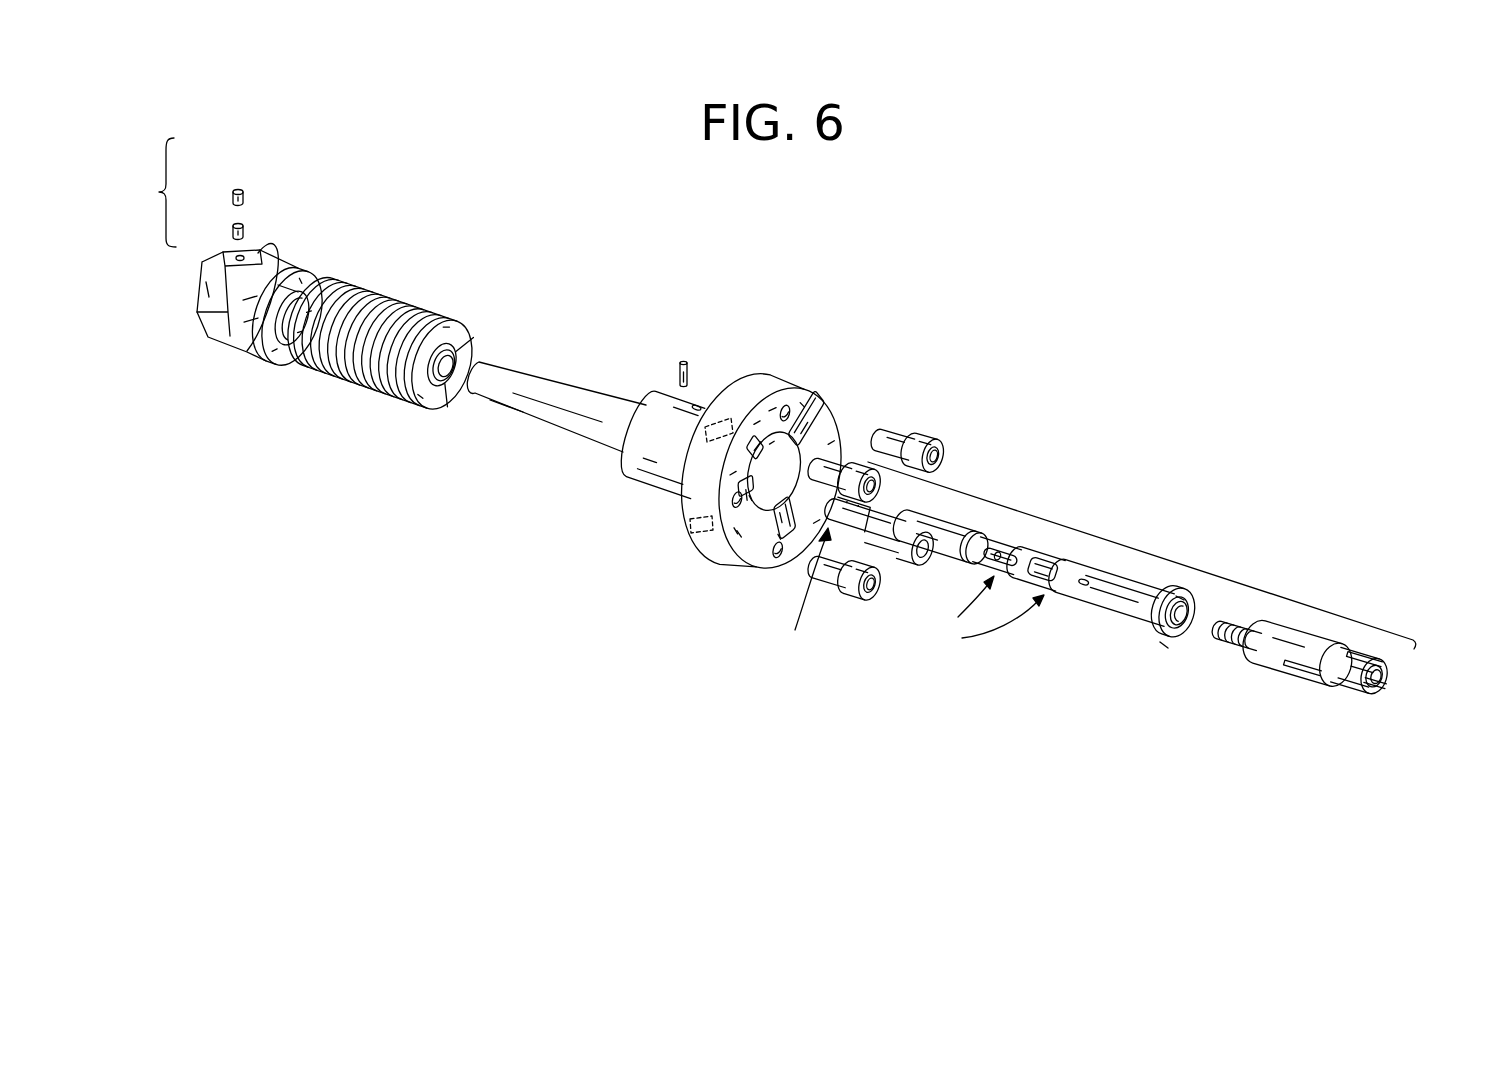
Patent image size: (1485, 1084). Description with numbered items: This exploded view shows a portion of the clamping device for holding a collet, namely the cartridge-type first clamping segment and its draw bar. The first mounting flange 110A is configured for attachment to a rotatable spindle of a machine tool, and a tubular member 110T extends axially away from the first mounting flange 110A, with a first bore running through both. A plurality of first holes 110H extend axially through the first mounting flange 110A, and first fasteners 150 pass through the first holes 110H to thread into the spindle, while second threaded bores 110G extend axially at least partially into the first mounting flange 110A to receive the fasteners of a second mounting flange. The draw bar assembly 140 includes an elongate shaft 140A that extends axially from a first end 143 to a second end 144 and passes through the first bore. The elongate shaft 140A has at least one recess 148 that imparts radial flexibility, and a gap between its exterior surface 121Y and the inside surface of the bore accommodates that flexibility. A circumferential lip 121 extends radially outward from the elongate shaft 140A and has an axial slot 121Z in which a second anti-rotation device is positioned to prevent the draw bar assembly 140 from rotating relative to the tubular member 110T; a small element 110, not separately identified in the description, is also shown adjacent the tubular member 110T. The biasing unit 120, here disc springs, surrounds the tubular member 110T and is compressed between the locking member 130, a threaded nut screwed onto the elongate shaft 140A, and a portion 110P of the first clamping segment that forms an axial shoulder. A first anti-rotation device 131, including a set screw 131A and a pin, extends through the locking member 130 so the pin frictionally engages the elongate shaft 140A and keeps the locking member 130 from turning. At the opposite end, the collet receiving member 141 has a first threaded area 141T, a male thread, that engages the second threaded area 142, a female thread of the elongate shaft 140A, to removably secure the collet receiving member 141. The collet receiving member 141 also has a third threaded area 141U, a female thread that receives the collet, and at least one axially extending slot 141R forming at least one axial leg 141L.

The first anti-rotation device 131 is at (158, 191).
The set screw 131A is at (232, 231).
The locking member 130 is at (288, 262).
The biasing unit 120 is at (407, 300).
The portion of the first clamping segment 110P is at (627, 413).
The pin 110 is at (685, 362).
The first mounting flange 110A is at (765, 375).
The second threaded bores 110G is at (813, 397).
The tubular member 110T is at (600, 425).
The first holes 110H is at (697, 532).
The first end 143 is at (804, 596).
The first fasteners 150 is at (898, 440).
The recess 148 is at (990, 586).
The elongate shaft 140A is at (1082, 600).
The exterior surface of the elongate shaft 121Y is at (1084, 576).
The draw bar assembly 140 is at (1128, 525).
The axial slot 121Z is at (1181, 600).
The second threaded area 142 is at (1195, 612).
The circumferential lip 121 is at (1157, 637).
The second end 144 is at (1172, 644).
The axial leg 141L is at (1338, 640).
The axially extending slot 141R is at (1365, 652).
The third threaded area 141U is at (1383, 690).
The collet receiving member 141 is at (1277, 685).
The first threaded area 141T is at (1233, 652).